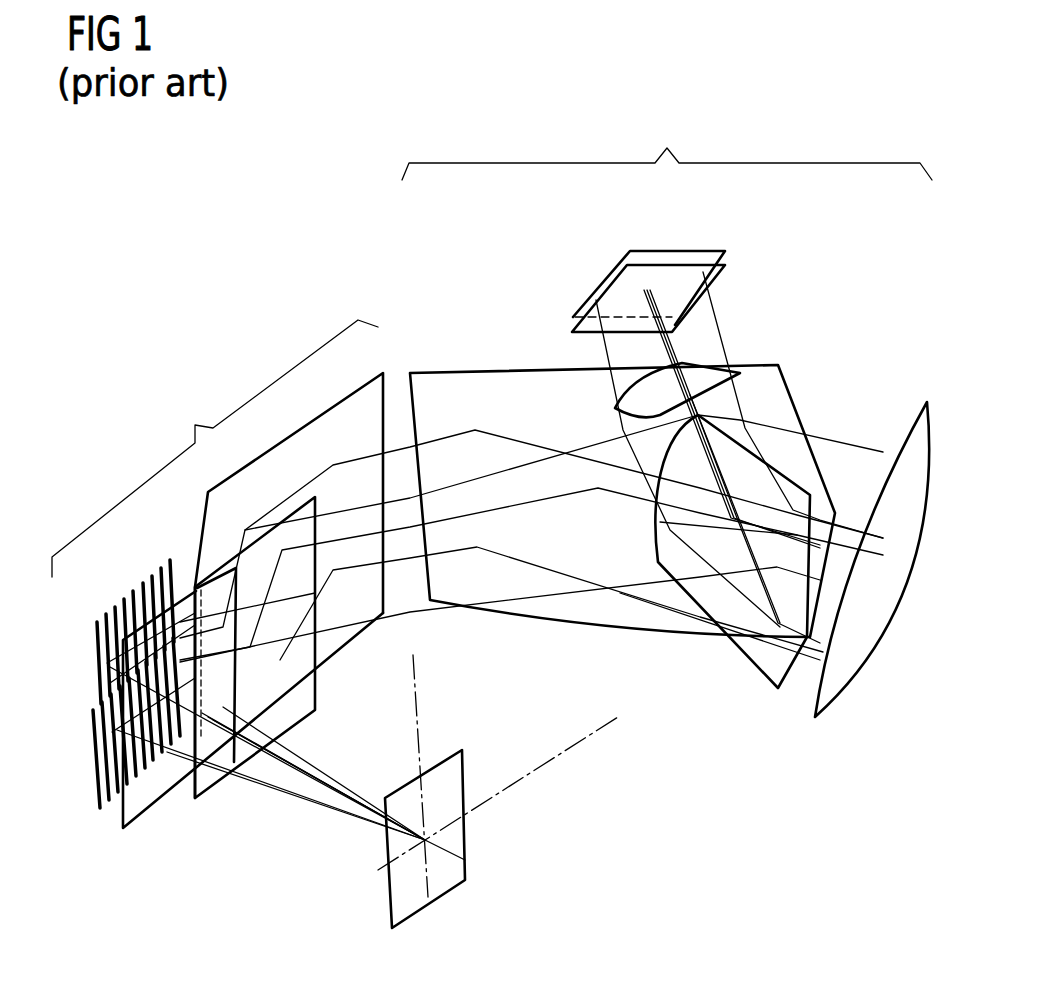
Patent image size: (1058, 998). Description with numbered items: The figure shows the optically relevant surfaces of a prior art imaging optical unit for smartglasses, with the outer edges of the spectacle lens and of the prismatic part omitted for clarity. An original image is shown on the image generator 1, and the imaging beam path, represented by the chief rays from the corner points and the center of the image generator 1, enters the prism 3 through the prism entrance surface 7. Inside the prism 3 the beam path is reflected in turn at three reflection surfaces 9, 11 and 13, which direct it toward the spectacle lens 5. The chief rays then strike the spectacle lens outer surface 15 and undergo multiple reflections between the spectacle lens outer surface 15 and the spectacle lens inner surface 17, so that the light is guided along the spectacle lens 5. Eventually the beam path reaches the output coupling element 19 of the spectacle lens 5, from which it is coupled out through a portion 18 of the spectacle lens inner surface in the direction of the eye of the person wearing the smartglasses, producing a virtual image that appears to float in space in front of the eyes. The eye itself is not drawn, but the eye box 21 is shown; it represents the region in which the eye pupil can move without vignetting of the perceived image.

The image generator 1 is at (669, 277).
The prism 3 is at (667, 147).
The spectacle lens 5 is at (215, 448).
The prism entrance surface 7 is at (710, 382).
The reflection surface 9 is at (742, 656).
The reflection surface 11 is at (862, 653).
The reflection surface 13 is at (490, 370).
The spectacle lens outer surface 15 is at (207, 526).
The spectacle lens inner surface 17 is at (315, 690).
The portion of the spectacle lens inner surface 18 is at (156, 796).
The output coupling element 19 is at (98, 635).
The eye box 21 is at (447, 896).